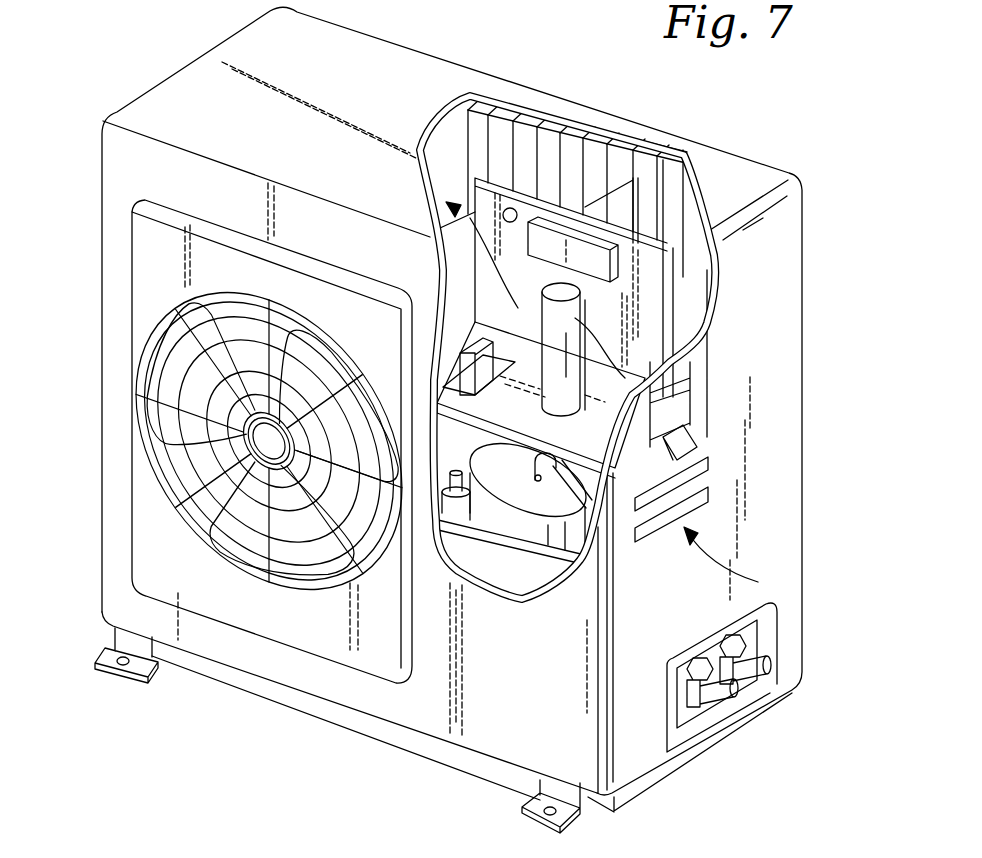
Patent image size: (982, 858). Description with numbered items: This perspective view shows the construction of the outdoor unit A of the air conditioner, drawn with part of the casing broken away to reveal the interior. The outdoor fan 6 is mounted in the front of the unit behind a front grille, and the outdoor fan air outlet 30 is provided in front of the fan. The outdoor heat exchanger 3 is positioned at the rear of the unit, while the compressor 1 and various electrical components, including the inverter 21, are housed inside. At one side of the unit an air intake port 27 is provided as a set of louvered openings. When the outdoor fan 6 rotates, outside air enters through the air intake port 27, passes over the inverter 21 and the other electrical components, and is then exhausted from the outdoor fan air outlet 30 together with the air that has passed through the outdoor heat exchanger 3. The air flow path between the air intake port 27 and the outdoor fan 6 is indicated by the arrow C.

The outdoor unit casing A is at (237, 53).
The compressor 1 is at (517, 540).
The outdoor heat exchanger 3 is at (540, 105).
The outdoor fan 6 is at (162, 332).
The inverter 21 is at (597, 255).
The air intake port 27 is at (697, 472).
The outdoor fan air outlet 30 is at (297, 590).
The arrow C is at (522, 311).